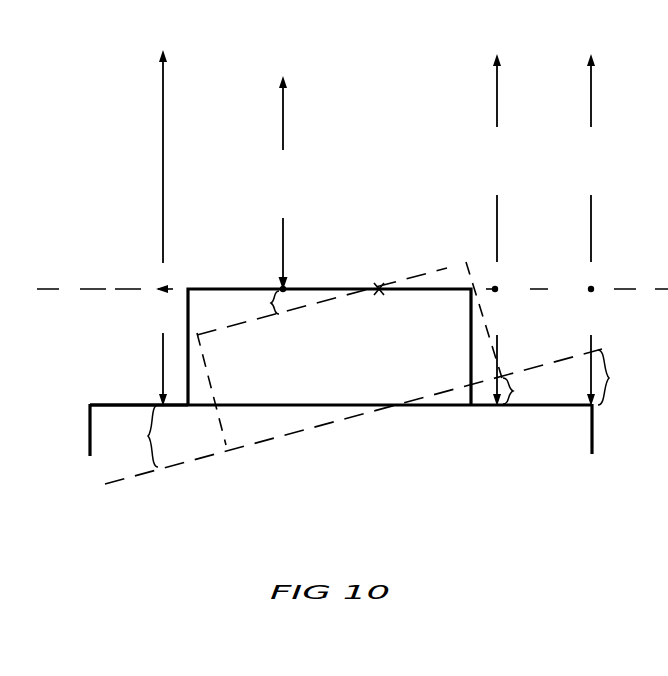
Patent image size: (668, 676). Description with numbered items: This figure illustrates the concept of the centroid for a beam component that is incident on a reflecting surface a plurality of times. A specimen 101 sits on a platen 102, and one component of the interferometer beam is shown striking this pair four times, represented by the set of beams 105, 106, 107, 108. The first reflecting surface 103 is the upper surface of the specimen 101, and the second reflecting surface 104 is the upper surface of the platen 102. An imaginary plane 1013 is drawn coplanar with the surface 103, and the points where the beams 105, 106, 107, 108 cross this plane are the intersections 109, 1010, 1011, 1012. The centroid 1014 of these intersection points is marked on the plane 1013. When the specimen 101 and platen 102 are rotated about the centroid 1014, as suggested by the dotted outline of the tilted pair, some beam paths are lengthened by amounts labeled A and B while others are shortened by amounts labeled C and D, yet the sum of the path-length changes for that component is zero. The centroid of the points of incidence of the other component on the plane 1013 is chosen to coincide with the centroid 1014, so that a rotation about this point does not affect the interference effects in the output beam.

The specimen 101 is at (305, 373).
The platen 102 is at (316, 460).
The first reflecting surface 103 is at (473, 286).
The second reflecting surface 104 is at (112, 405).
The beam 105 is at (163, 212).
The beam 106 is at (283, 224).
The beam 107 is at (496, 121).
The beam 108 is at (593, 103).
The intersection 109 is at (162, 288).
The intersection 1010 is at (280, 285).
The intersection 1011 is at (496, 289).
The intersection 1012 is at (593, 289).
The imaginary plane 1013 is at (79, 289).
The centroid 1014 is at (379, 285).